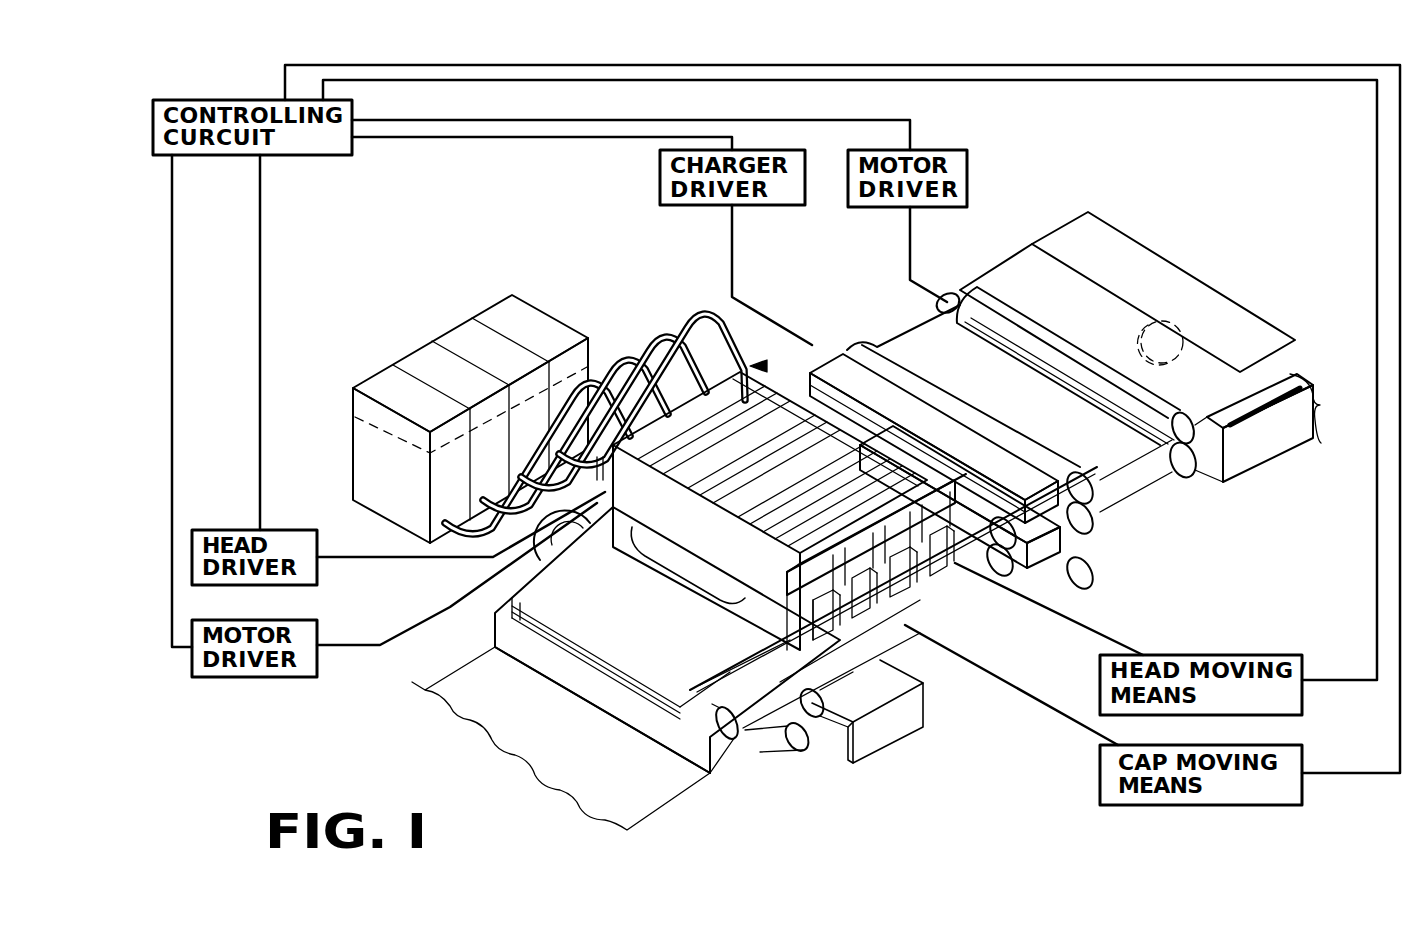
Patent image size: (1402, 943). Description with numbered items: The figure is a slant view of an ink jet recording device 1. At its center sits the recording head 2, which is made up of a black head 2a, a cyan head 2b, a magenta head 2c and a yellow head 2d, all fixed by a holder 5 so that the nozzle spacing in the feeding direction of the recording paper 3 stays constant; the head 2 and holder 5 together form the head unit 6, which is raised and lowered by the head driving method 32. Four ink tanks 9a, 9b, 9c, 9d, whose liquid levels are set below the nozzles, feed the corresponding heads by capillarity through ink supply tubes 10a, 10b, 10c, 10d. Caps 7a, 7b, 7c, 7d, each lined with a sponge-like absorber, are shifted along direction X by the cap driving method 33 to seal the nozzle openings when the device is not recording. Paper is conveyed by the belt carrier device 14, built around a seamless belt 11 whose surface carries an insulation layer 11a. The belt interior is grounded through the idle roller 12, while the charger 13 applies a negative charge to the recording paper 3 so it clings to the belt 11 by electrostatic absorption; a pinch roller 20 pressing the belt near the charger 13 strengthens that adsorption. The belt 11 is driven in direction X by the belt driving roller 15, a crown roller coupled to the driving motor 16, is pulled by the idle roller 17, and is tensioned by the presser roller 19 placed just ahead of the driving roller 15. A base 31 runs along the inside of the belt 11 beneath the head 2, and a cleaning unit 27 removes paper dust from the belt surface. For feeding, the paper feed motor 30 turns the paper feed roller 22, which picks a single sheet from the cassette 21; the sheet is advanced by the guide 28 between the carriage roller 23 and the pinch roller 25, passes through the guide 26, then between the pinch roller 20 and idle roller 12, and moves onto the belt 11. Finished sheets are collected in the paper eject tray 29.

The ink jet recording device 1 is at (627, 60).
The recording head 2 is at (610, 660).
The black head 2a is at (650, 470).
The cyan head 2b is at (700, 496).
The magenta head 2c is at (748, 524).
The yellow head 2d is at (745, 505).
The recording paper 3 is at (657, 665).
The holder 5 is at (768, 366).
The head unit 6 is at (773, 595).
The cap 7a is at (947, 570).
The cap 7b is at (913, 593).
The cap 7c is at (867, 603).
The cap 7d is at (830, 647).
The ink tank 9a is at (503, 313).
The ink tank 9b is at (455, 318).
The ink tank 9c is at (427, 357).
The ink tank 9d is at (390, 387).
The ink supply tube 10a is at (712, 310).
The ink supply tube 10b is at (668, 333).
The ink supply tube 10c is at (632, 355).
The ink supply tube 10d is at (590, 383).
The seamless belt 11 is at (967, 630).
The insulation layer 11a is at (876, 562).
The idle roller 12 is at (1000, 575).
The charger 13 is at (842, 368).
The belt carrier device 14 is at (988, 740).
The belt driving roller 15 is at (797, 750).
The driving motor 16 is at (567, 530).
The idle roller 17 is at (740, 738).
The presser roller 19 is at (822, 722).
The pinch roller 20 is at (1097, 527).
The cassette 21 is at (1260, 450).
The paper feed roller 22 is at (1170, 320).
The carriage roller 23 is at (1193, 467).
The pinch roller 25 is at (1188, 412).
The guide 26 is at (927, 345).
The cleaning unit 27 is at (895, 718).
The guide 28 is at (1068, 238).
The paper eject tray 29 is at (573, 763).
The paper feed motor 30 is at (957, 298).
The base 31 is at (887, 622).
The head driving method 32 is at (1273, 655).
The cap driving method 33 is at (1273, 746).
The direction X is at (573, 676).